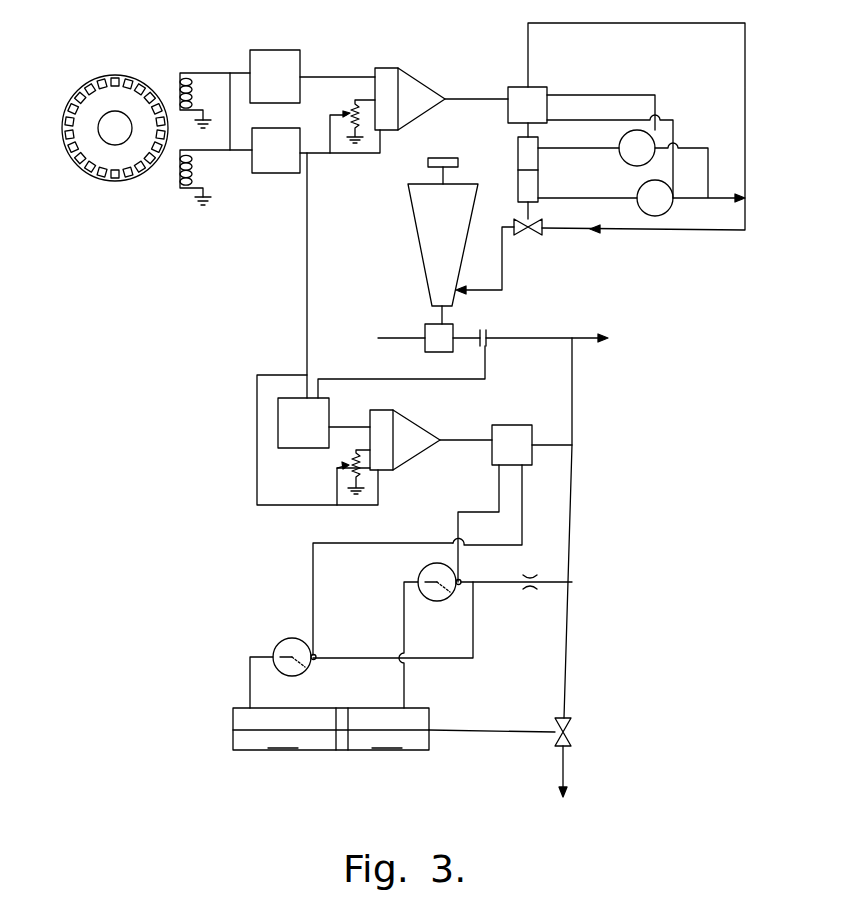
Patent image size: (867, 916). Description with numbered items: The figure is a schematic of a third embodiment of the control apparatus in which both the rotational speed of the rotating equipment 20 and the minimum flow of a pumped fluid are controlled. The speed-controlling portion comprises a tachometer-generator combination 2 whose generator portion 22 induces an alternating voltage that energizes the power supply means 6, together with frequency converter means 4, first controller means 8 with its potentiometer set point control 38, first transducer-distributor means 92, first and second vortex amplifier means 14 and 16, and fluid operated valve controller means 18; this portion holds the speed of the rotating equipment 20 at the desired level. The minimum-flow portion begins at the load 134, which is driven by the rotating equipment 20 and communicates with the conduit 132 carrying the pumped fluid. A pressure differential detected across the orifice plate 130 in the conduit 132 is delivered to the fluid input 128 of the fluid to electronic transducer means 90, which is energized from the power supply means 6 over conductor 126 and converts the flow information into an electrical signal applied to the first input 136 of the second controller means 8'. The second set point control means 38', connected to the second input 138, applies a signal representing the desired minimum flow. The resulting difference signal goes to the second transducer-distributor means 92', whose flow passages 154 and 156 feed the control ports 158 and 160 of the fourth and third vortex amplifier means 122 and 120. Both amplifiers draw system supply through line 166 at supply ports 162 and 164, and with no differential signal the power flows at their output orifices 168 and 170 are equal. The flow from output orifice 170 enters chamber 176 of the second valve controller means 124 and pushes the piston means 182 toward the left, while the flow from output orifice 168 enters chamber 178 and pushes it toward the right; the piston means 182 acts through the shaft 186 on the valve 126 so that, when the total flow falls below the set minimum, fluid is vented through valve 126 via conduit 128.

The tachometer-generator combination 2 is at (75, 89).
The generator portion 22 is at (106, 143).
The frequency converter means 4 is at (269, 50).
The power supply means 6 is at (270, 174).
The set point control 38 is at (341, 120).
The first controller means 8 is at (410, 88).
The first transducer-distributor means 92 is at (517, 86).
The fluid operated valve controller means 18 is at (540, 180).
The first vortex amplifier means 14 is at (623, 158).
The second vortex amplifier means 16 is at (637, 207).
The rotating equipment 20 is at (421, 254).
The load 134 is at (425, 347).
The orifice plate 130 is at (492, 336).
The conduit 132 is at (497, 342).
The valve 126 is at (306, 290).
The fluid input 128 is at (320, 399).
The second input 138 is at (257, 447).
The fluid to electronic transducer means 90 is at (292, 450).
The first input 136 is at (350, 426).
The second set point control means 38' is at (326, 476).
The second controller means 8' is at (405, 430).
The second transducer-distributor means 92' is at (508, 428).
The line 166 is at (572, 484).
The flow passage 156 is at (499, 483).
The flow passage 154 is at (523, 488).
The control port 158 is at (313, 567).
The control port 160 is at (440, 562).
The third vortex amplifier means 120 is at (433, 602).
The supply port 164 is at (461, 580).
The output orifice 170 is at (403, 615).
The fourth vortex amplifier means 122 is at (305, 670).
The supply port 162 is at (317, 653).
The output orifice 168 is at (250, 655).
The second valve controller means 124 is at (395, 755).
The piston means 182 is at (340, 740).
The chamber 178 is at (287, 738).
The chamber 176 is at (391, 738).
The shaft 186 is at (463, 732).